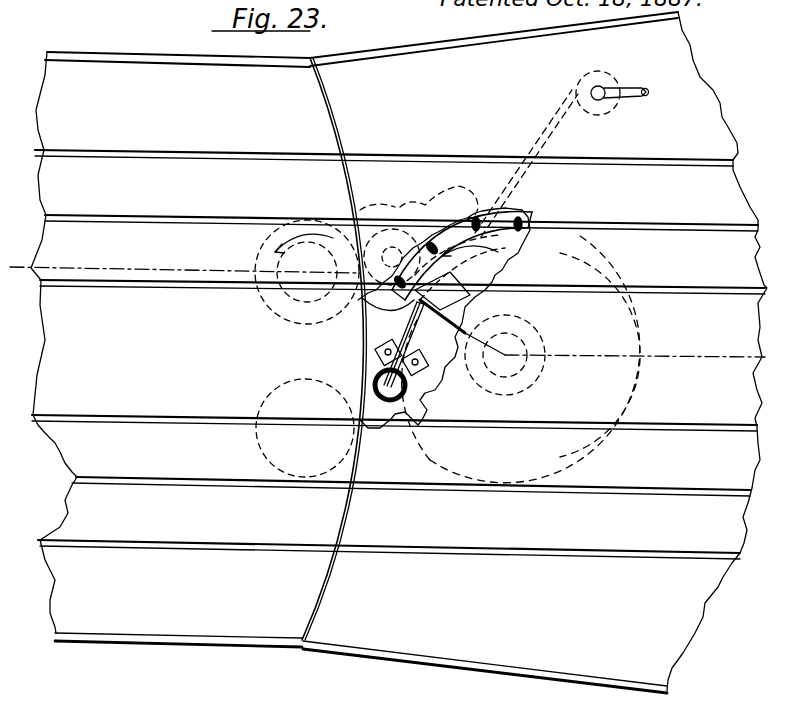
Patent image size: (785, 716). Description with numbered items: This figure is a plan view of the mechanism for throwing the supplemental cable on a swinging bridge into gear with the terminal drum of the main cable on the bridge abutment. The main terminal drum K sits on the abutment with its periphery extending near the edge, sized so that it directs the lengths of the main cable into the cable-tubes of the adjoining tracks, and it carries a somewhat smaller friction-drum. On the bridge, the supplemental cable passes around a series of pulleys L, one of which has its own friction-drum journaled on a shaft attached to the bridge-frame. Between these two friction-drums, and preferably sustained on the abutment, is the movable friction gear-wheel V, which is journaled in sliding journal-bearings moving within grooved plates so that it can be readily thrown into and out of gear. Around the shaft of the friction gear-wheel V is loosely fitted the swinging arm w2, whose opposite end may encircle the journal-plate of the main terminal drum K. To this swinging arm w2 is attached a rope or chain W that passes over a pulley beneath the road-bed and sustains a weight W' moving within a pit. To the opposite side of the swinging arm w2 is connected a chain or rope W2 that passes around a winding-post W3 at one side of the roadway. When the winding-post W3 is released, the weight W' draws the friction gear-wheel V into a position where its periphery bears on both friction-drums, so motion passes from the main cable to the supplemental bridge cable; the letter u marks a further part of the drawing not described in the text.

The pulley L is at (307, 272).
The lower gear wheel u is at (378, 376).
The friction gear-wheel V is at (377, 299).
The main terminal drum K is at (460, 273).
The swinging arm w2 is at (442, 302).
The rope or chain W is at (400, 344).
The weight W' is at (407, 385).
The chain or rope W2 is at (548, 128).
The winding-post W3 is at (612, 92).